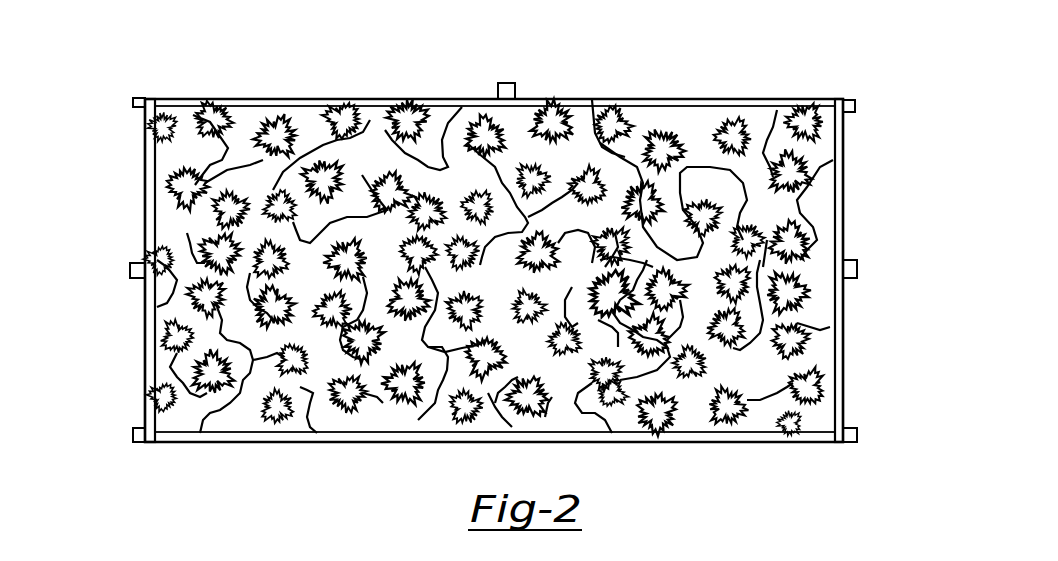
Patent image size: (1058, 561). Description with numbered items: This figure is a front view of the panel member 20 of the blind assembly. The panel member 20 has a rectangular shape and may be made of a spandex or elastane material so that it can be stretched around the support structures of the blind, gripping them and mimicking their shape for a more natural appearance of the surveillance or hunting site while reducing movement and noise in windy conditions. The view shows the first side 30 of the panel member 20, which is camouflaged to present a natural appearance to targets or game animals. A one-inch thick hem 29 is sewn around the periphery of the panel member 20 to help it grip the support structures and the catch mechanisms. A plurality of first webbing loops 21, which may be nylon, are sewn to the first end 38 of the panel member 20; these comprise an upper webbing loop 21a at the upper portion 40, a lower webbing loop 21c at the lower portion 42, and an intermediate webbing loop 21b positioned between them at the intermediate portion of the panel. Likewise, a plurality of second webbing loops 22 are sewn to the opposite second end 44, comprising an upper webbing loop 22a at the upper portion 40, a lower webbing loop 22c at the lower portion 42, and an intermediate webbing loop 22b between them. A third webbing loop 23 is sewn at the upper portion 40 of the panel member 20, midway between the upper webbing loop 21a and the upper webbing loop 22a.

The panel member 20 is at (496, 283).
The plurality of first webbing loops 21 is at (113, 311).
The upper webbing loop 21a is at (133, 102).
The intermediate webbing loop 21b is at (130, 270).
The lower webbing loop 21c is at (133, 434).
The plurality of second webbing loops 22 is at (873, 315).
The upper webbing loop 22a is at (856, 106).
The intermediate webbing loop 22b is at (857, 270).
The lower webbing loop 22c is at (858, 434).
The third webbing loop 23 is at (507, 83).
The hem 29 is at (843, 193).
The first side 30 is at (232, 236).
The first end 38 is at (140, 320).
The upper portion 40 is at (366, 112).
The lower portion 42 is at (393, 432).
The second end 44 is at (848, 322).